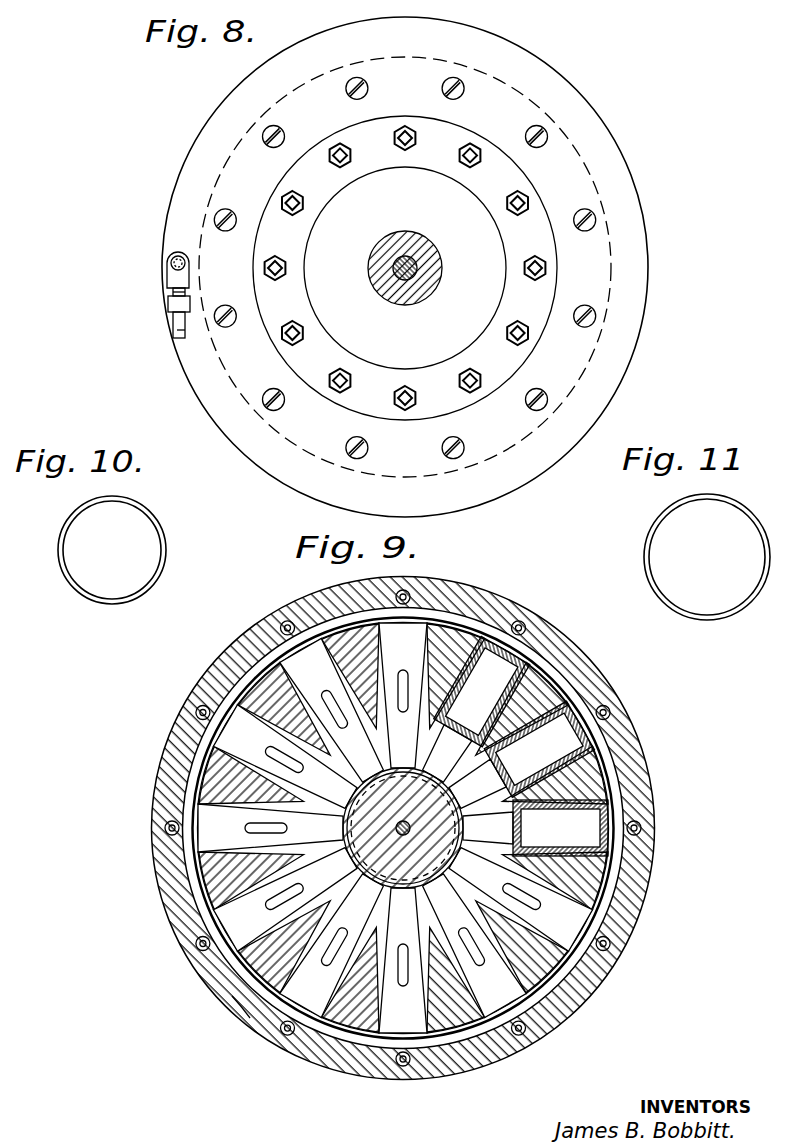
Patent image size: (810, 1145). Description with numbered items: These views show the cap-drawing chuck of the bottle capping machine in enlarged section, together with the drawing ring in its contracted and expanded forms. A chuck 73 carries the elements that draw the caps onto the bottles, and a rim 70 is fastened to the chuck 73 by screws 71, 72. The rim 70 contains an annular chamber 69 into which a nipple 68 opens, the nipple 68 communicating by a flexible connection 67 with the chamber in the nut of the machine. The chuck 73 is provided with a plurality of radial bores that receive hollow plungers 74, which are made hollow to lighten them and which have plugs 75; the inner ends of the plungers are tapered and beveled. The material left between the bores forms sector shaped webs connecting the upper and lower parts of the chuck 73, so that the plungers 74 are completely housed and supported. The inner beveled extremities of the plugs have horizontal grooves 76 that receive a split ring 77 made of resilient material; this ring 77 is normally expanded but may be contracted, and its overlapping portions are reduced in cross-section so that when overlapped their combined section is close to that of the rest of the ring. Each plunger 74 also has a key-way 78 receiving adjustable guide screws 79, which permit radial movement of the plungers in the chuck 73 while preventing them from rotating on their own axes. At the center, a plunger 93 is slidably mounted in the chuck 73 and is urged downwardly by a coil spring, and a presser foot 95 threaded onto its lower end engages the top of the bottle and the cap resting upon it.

In FIG. 8, the flexible connection 67 is at (176, 325).
In FIG. 8, the nipple 68 is at (172, 262).
In FIG. 9, the annular chamber 69 is at (556, 978).
In FIG. 8, the rim 70 is at (167, 283).
In FIG. 9, the rim 70 is at (232, 996).
In FIG. 9, the screws 71 is at (628, 836).
In FIG. 8, the screws 72 is at (458, 92).
In FIG. 8, the chuck 73 is at (405, 268).
In FIG. 9, the chuck 73 is at (600, 880).
In FIG. 9, the hollow plungers 74 is at (395, 828).
In FIG. 9, the plugs 75 is at (512, 650).
In FIG. 9, the horizontal grooves 76 is at (452, 746).
In FIG. 10, the split ring 77 is at (86, 597).
In FIG. 11, the split ring 77 is at (650, 538).
In FIG. 9, the split ring 77 is at (452, 806).
In FIG. 9, the key-way 78 is at (381, 818).
In FIG. 8, the adjustable guide screws 79 is at (518, 214).
In FIG. 8, the plunger 93 is at (425, 268).
In FIG. 9, the plunger 93 is at (410, 836).
In FIG. 9, the presser foot 95 is at (372, 800).